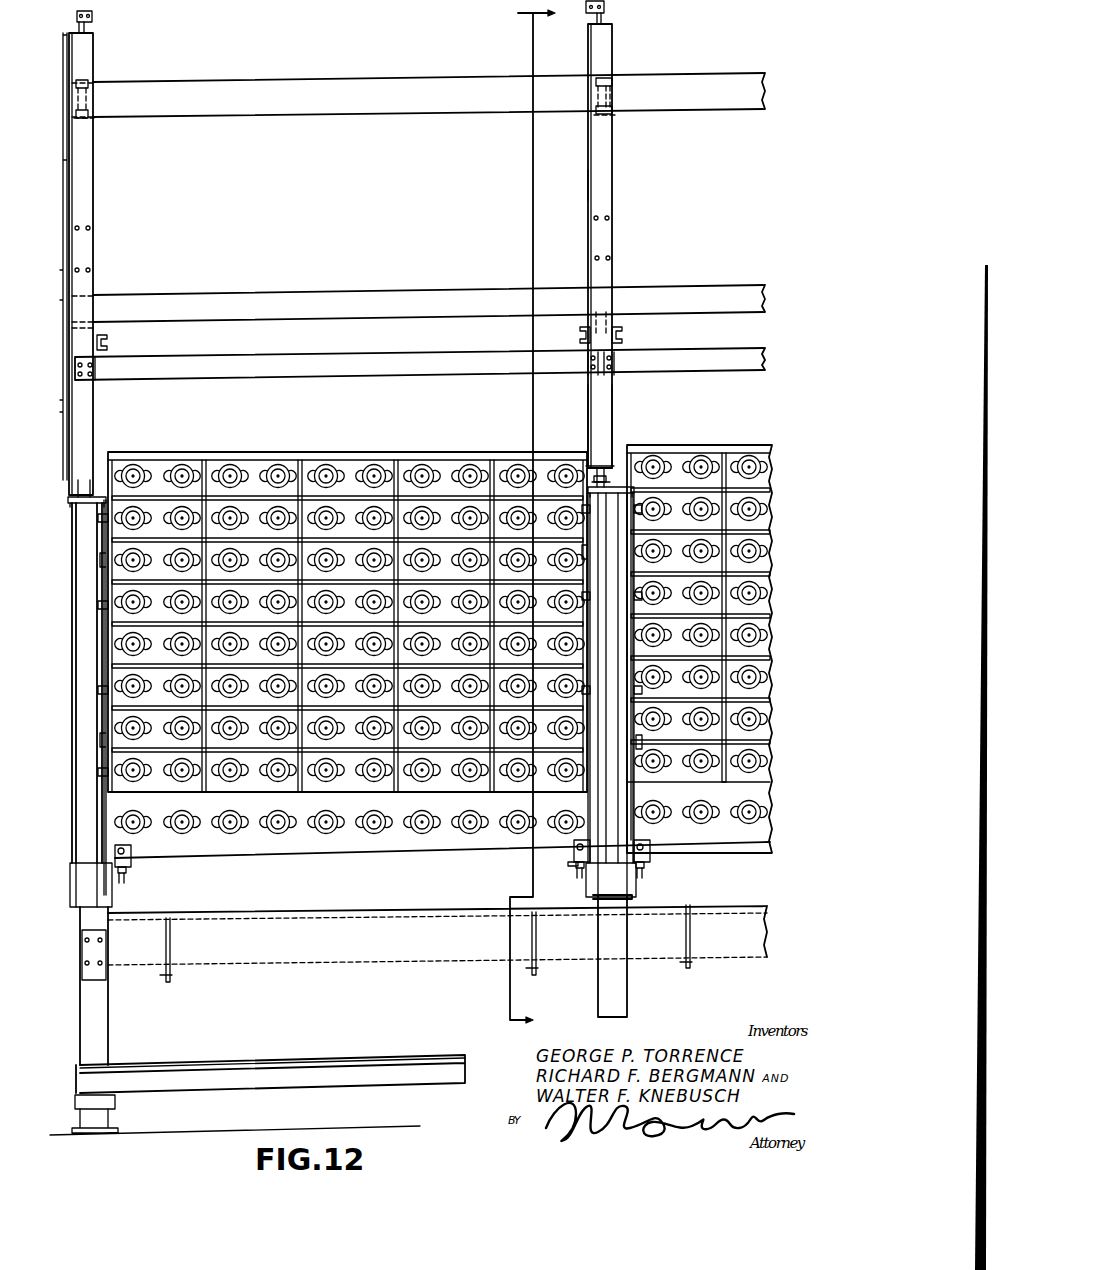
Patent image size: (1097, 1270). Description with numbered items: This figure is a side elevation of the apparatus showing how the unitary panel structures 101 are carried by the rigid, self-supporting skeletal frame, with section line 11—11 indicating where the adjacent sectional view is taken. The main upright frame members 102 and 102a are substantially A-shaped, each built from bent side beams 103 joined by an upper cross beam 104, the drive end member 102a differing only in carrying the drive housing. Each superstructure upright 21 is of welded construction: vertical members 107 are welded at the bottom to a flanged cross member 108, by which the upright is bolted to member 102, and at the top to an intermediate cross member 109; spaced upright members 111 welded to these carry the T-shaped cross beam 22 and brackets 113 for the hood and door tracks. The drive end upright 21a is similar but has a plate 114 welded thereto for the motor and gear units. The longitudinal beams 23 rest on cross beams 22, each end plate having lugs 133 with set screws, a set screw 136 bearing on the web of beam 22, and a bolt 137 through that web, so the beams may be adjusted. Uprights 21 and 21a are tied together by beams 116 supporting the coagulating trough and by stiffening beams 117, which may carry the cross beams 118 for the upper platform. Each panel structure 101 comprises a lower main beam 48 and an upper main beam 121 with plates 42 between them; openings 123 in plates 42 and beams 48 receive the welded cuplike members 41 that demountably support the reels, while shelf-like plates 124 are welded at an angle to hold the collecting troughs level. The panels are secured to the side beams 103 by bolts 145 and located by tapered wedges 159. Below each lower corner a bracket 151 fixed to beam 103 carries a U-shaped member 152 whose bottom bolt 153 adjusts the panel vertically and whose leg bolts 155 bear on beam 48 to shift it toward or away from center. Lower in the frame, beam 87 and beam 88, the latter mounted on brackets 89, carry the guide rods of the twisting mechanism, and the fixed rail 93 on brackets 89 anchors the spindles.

The section line 11— 11 is at (518, 519).
The upright frame member 21 is at (616, 212).
The drive end upright supporting member 21a is at (96, 222).
The cross beam 22 is at (78, 122).
The longitudinally extending beam 23 is at (326, 106).
The cuplike member 41 is at (749, 808).
The inclined plate 42 is at (255, 462).
The lower main beam 48 is at (312, 856).
The beam 87 is at (358, 948).
The beam 88 is at (299, 1065).
The bracket 89 is at (102, 1108).
The fixed rail 93 is at (408, 1076).
The panel structure 101 is at (492, 450).
The main upright frame member 102 is at (630, 1000).
The drive end upright frame member 102a is at (110, 1021).
The side beam 103 is at (80, 605).
The upper cross beam 104 is at (72, 503).
The vertical member 107 is at (590, 402).
The flanged cross member 108 is at (598, 479).
The intermediate cross member 109 is at (616, 318).
The upright member 111 is at (590, 184).
The bracket 113 is at (92, 18).
The plate 114 is at (64, 205).
The beam 116 is at (341, 298).
The stiffening beam 117 is at (333, 365).
The cross beam 118 is at (110, 344).
The upper main beam 121 is at (320, 452).
The opening 123 is at (182, 465).
The shelf-like plate 124 is at (765, 698).
The lug 133 is at (95, 114).
The set screw 136 is at (92, 102).
The bolt 137 is at (95, 88).
The bolt 145 is at (100, 690).
The bracket 151 is at (578, 868).
The U-shaped member 152 is at (128, 870).
The bolt 153 is at (124, 884).
The bolt 155 is at (131, 848).
The tapered wedge 159 is at (100, 568).